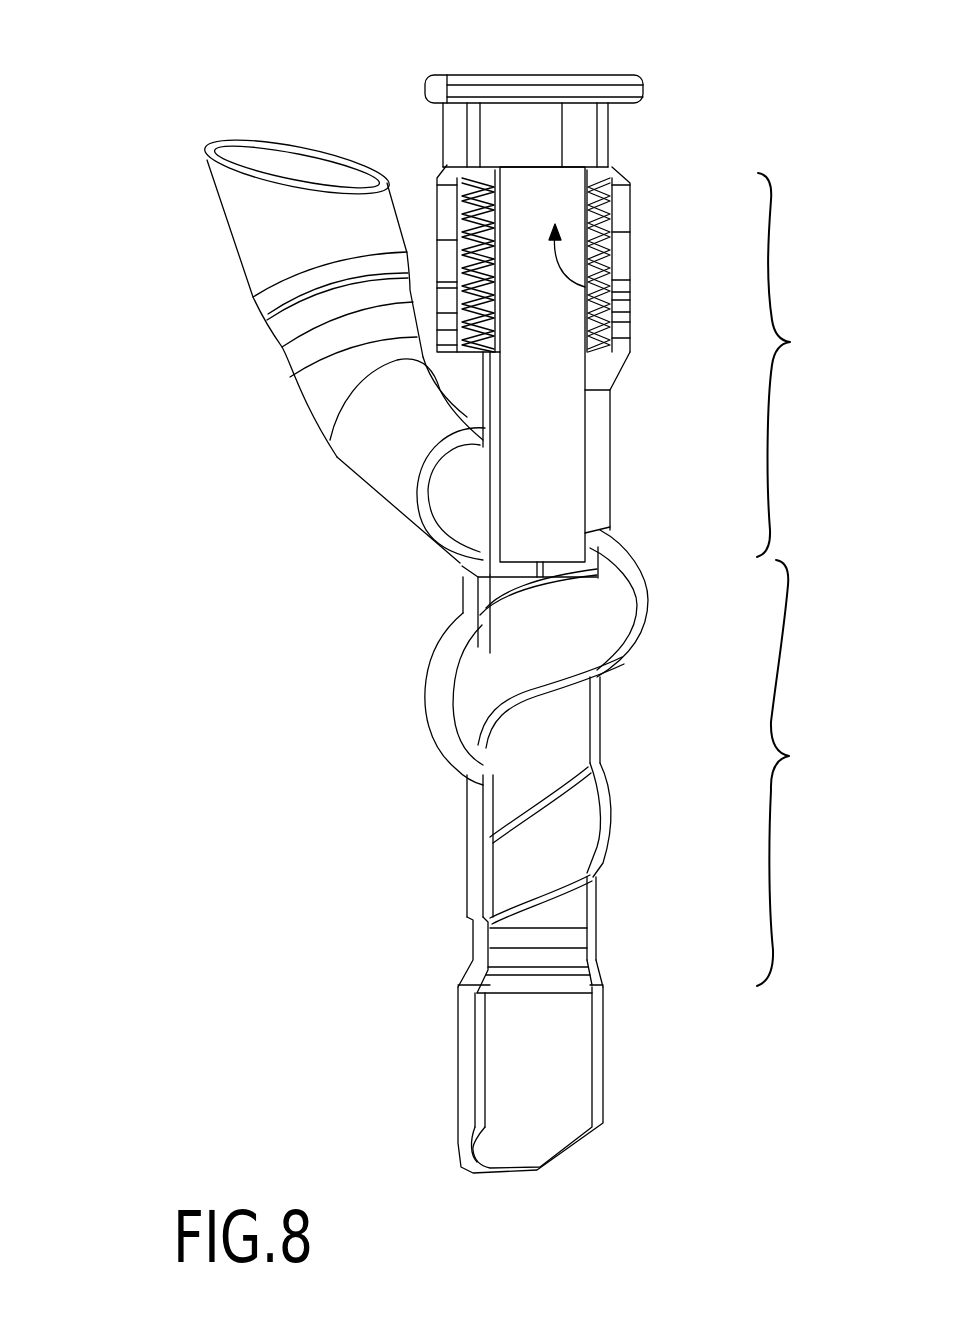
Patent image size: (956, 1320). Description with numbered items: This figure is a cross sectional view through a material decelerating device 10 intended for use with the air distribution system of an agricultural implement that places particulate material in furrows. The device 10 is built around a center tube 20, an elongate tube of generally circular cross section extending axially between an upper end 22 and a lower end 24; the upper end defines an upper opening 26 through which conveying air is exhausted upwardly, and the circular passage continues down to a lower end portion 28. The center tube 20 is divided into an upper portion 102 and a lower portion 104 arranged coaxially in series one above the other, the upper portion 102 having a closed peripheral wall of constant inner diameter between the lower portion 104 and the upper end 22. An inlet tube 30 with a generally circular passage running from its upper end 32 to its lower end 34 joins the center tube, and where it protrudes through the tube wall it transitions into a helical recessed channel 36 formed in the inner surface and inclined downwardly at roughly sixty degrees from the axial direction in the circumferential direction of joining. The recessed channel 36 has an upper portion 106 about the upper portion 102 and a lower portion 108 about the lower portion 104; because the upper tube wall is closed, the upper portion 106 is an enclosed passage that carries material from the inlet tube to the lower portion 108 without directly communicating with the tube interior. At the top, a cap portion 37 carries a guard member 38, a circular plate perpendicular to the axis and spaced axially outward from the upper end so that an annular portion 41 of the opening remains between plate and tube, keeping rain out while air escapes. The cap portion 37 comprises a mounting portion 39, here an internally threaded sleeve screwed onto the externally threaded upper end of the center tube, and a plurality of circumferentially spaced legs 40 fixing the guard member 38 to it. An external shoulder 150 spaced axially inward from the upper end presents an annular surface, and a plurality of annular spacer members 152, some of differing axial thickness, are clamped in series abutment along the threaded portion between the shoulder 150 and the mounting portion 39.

The material decelerating device 10 is at (108, 551).
The center tube 20 is at (612, 722).
The upper end 22 is at (573, 162).
The lower end 24 is at (592, 955).
The upper opening 26 is at (612, 283).
The lower end portion 28 is at (603, 1062).
The inlet tube 30 is at (280, 387).
The upper end 32 is at (261, 265).
The lower end 34 is at (345, 454).
The helical recessed channel 36 is at (640, 636).
The cap portion 37 is at (408, 118).
The guard member 38 is at (532, 85).
The mounting portion 39 is at (633, 212).
The legs 40 is at (525, 118).
The annular portion 41 is at (595, 97).
The upper portion 102 is at (807, 365).
The lower portion 104 is at (810, 773).
The upper portion of the recessed channel 106 is at (427, 515).
The lower portion of the recessed channel 108 is at (437, 716).
The shoulder 150 is at (630, 345).
The annular spacer members 152 is at (632, 300).